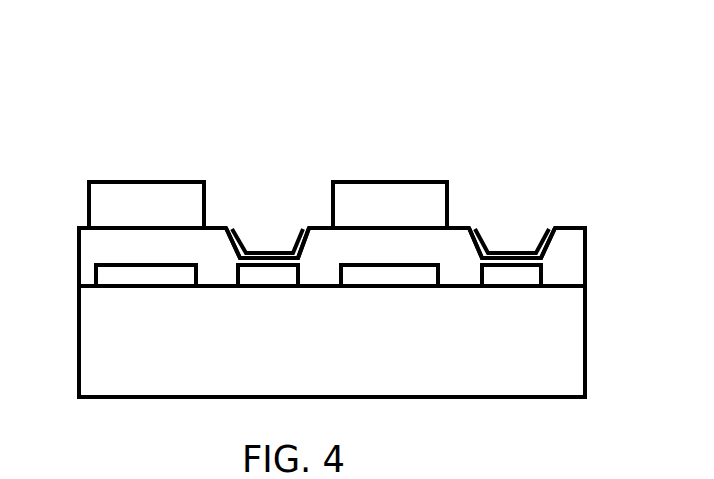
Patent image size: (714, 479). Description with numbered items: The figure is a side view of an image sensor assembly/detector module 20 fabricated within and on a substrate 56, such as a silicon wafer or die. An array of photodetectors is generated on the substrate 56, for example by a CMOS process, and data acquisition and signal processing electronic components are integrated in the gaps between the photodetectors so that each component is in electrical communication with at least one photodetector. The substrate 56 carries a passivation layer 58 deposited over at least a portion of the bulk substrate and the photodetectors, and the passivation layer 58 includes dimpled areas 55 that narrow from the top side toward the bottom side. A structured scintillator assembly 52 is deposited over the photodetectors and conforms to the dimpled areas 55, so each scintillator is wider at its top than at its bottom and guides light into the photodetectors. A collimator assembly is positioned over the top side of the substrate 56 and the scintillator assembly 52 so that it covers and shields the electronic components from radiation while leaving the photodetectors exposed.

The image sensor assembly/detector module 20 is at (476, 62).
The scintillator assembly 52 is at (86, 225).
The dimpled area 55 is at (229, 253).
The substrate 56 is at (88, 379).
The passivation layer 58 is at (577, 255).